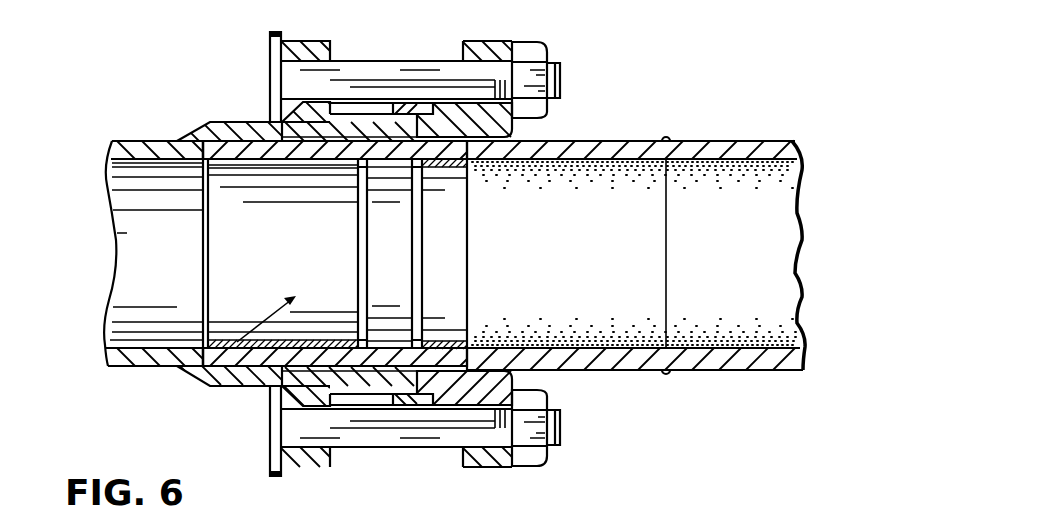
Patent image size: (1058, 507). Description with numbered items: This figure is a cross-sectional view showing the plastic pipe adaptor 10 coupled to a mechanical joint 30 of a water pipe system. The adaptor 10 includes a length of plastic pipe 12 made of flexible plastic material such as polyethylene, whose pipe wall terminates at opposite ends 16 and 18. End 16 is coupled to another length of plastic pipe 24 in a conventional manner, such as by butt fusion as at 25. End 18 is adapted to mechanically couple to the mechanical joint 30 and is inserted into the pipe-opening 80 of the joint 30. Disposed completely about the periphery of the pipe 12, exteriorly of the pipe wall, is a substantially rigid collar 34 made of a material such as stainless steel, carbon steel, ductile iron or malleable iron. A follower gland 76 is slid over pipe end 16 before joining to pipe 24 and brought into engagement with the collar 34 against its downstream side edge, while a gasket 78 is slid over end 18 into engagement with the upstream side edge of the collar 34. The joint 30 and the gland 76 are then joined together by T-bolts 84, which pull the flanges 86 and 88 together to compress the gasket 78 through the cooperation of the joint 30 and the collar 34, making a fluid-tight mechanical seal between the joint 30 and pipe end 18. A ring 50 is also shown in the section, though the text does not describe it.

The plastic pipe adaptor 10 is at (210, 367).
The plastic pipe 12 is at (580, 152).
The end 16 is at (665, 233).
The end 18 is at (195, 264).
The plastic pipe 24 is at (796, 141).
The butt fusion 25 is at (668, 139).
The mechanical joint 30 is at (193, 131).
The collar 34 is at (420, 128).
The inner ring 50 is at (383, 366).
The follower gland 76 is at (441, 396).
The gasket 78 is at (313, 166).
The pipe-opening 80 is at (244, 165).
The T-bolts 84 is at (442, 72).
The flange 86 is at (313, 46).
The flange 88 is at (508, 44).